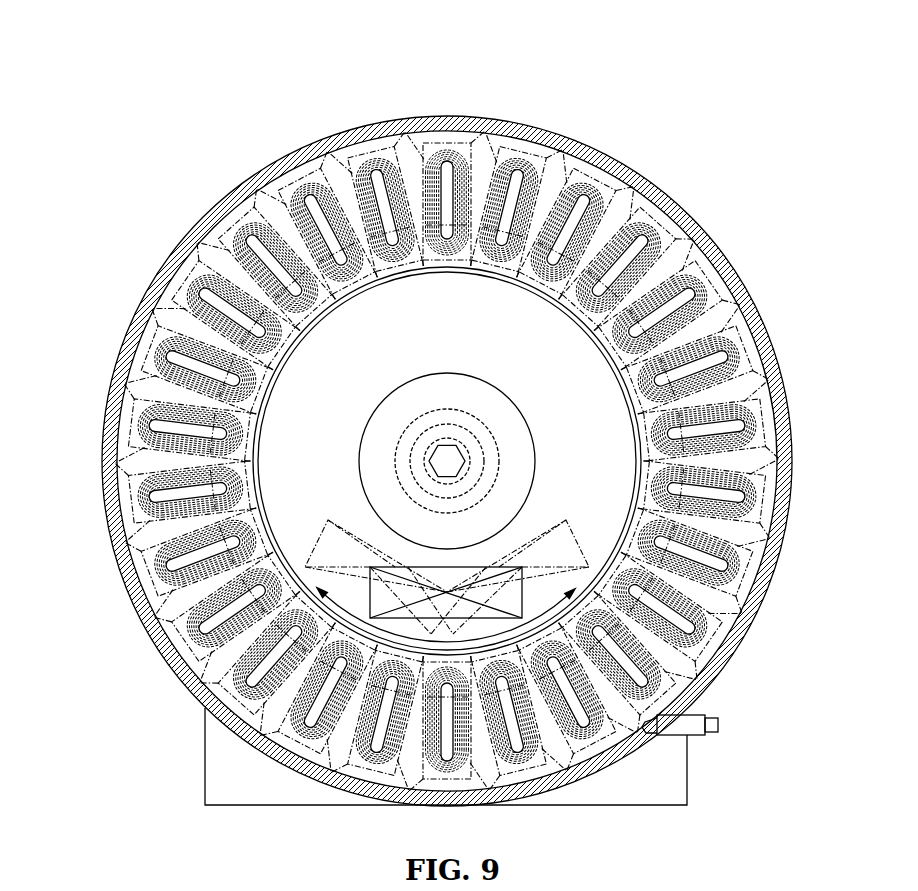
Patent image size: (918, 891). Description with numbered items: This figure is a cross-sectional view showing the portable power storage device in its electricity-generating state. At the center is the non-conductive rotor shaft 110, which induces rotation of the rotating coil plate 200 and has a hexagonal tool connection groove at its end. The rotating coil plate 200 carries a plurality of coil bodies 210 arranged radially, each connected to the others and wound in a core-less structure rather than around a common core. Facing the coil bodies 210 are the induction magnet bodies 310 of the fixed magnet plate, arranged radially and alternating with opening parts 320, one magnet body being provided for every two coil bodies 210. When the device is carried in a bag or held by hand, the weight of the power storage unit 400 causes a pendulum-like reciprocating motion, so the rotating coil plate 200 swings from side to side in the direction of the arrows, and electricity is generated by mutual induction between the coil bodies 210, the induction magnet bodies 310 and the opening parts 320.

The rotor shaft 110 is at (432, 448).
The rotating coil plate 200 is at (598, 418).
The coil body 210 is at (417, 163).
The induction magnet body 310 is at (477, 163).
The opening part 320 is at (588, 183).
The power storage unit 400 is at (768, 543).